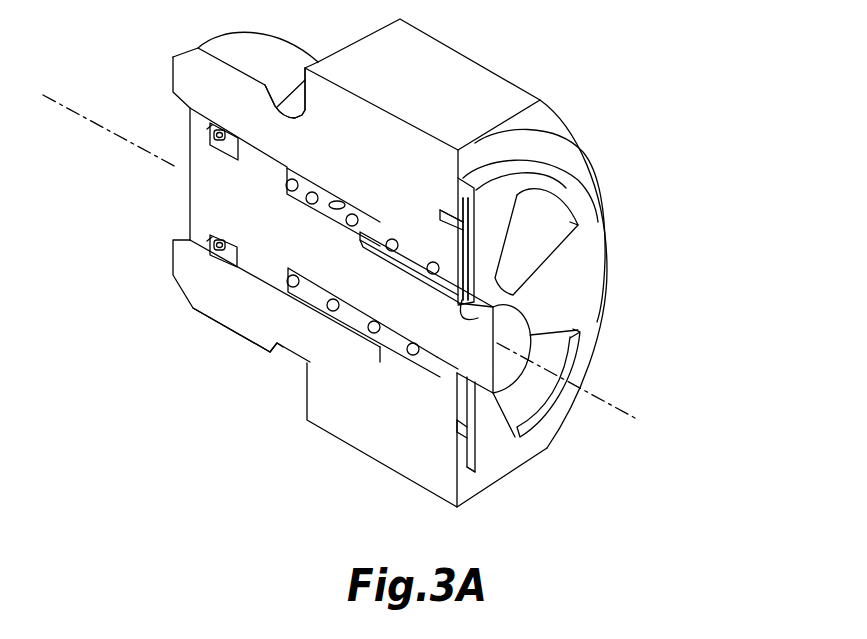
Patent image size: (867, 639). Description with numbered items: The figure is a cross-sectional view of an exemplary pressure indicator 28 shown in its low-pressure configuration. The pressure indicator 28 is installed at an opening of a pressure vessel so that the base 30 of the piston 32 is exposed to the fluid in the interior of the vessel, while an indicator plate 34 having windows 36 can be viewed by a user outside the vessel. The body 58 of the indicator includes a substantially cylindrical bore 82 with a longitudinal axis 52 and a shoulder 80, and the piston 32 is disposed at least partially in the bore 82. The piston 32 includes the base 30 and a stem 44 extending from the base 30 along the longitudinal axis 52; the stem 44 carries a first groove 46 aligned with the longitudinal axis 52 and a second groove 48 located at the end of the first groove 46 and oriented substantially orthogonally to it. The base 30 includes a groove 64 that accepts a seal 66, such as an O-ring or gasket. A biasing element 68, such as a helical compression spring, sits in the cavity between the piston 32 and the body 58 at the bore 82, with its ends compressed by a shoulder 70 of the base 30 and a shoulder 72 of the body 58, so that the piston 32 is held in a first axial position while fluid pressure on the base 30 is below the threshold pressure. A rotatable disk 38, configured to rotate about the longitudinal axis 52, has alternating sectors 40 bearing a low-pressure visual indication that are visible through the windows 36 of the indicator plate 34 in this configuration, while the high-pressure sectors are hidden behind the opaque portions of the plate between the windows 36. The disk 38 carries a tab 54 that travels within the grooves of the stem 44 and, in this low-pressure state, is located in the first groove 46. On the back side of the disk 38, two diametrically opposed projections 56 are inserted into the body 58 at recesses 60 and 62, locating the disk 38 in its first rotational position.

The pressure indicator 28 is at (586, 71).
The base 30 is at (190, 212).
The piston 32 is at (284, 244).
The indicator plate 34 is at (580, 258).
The windows 36 is at (565, 228).
The rotatable disk 38 is at (463, 413).
The low-pressure sectors 40 is at (547, 213).
The stem 44 is at (340, 375).
The first groove 46 is at (412, 270).
The second groove 48 is at (372, 247).
The longitudinal axis 52 is at (635, 392).
The tab 54 is at (540, 295).
The projections 56 is at (452, 205).
The body 58 is at (466, 79).
The recess 60 is at (440, 215).
The recess 62 is at (457, 440).
The groove 64 is at (212, 250).
The seal 66 is at (218, 133).
The biasing element 68 is at (320, 185).
The shoulder 70 is at (302, 120).
The shoulder 72 is at (462, 256).
The shoulder 80 is at (345, 225).
The bore 82 is at (320, 365).